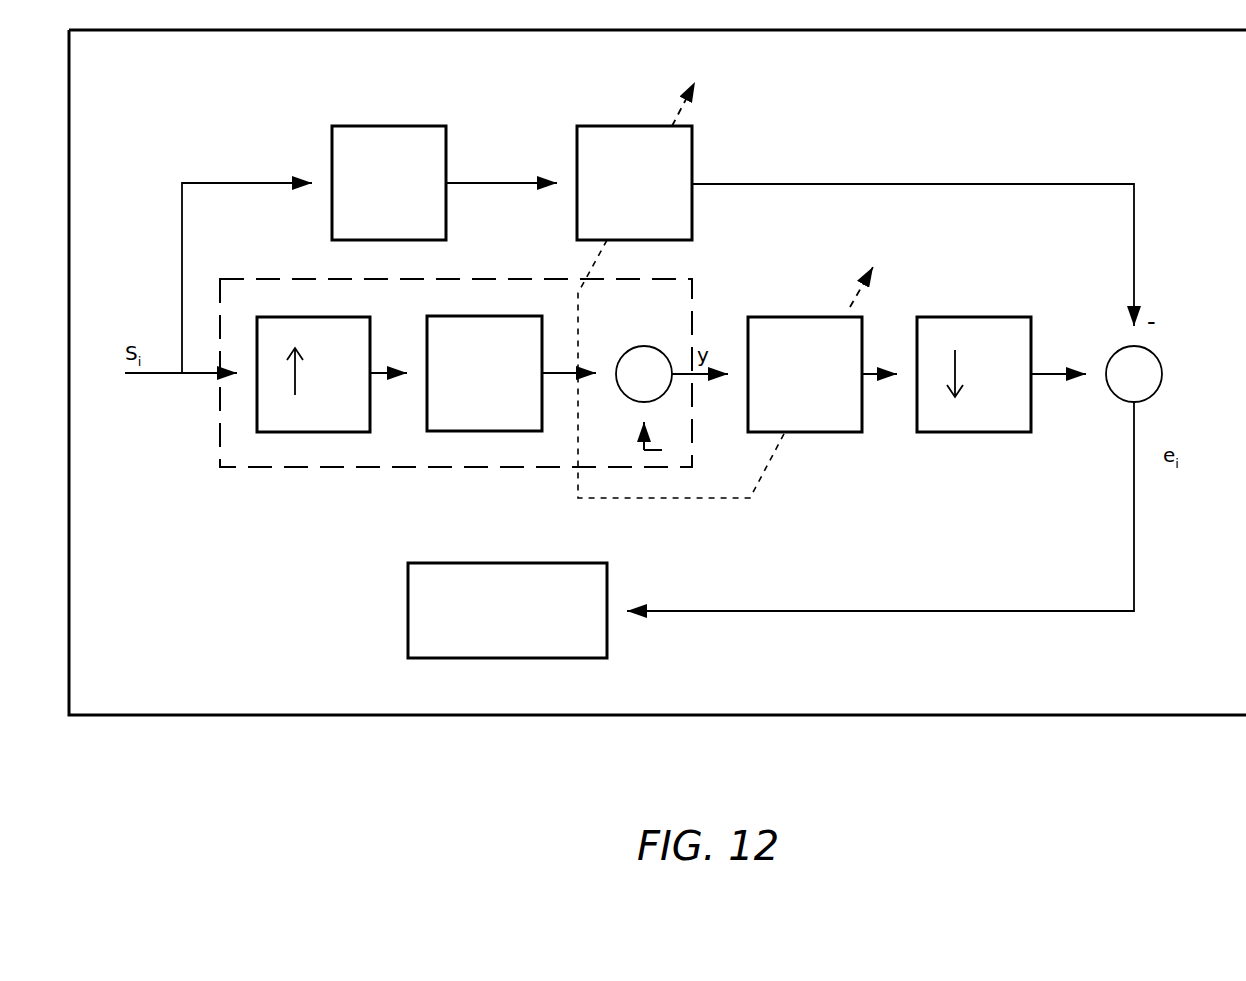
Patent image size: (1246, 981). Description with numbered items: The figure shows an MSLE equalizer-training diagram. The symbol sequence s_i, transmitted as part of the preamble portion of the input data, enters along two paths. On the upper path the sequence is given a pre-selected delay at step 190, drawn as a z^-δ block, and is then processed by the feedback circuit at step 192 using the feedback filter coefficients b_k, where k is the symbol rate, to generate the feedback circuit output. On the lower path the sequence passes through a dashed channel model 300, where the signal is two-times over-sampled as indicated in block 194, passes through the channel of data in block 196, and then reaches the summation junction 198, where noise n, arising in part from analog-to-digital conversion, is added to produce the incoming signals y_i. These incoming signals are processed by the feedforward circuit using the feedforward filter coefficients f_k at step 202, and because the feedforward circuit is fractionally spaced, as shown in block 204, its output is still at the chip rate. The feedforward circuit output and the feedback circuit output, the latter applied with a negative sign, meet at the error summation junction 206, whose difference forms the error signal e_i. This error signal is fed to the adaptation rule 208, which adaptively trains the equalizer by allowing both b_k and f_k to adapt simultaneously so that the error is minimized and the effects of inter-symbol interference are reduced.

The pre-selected delay step 190 is at (386, 126).
The feedback circuit processing step 192 is at (631, 126).
The 2× over-sampling 194 is at (315, 432).
The channel of data 196 is at (500, 431).
The summation junction 198 is at (622, 393).
The feedforward filter coefficients step 202 is at (805, 432).
The fractionally spaced feedforward circuit 204 is at (975, 432).
The error summation junction 206 is at (1162, 374).
The adaptation rule 208 is at (505, 563).
The channel model 300 is at (220, 405).